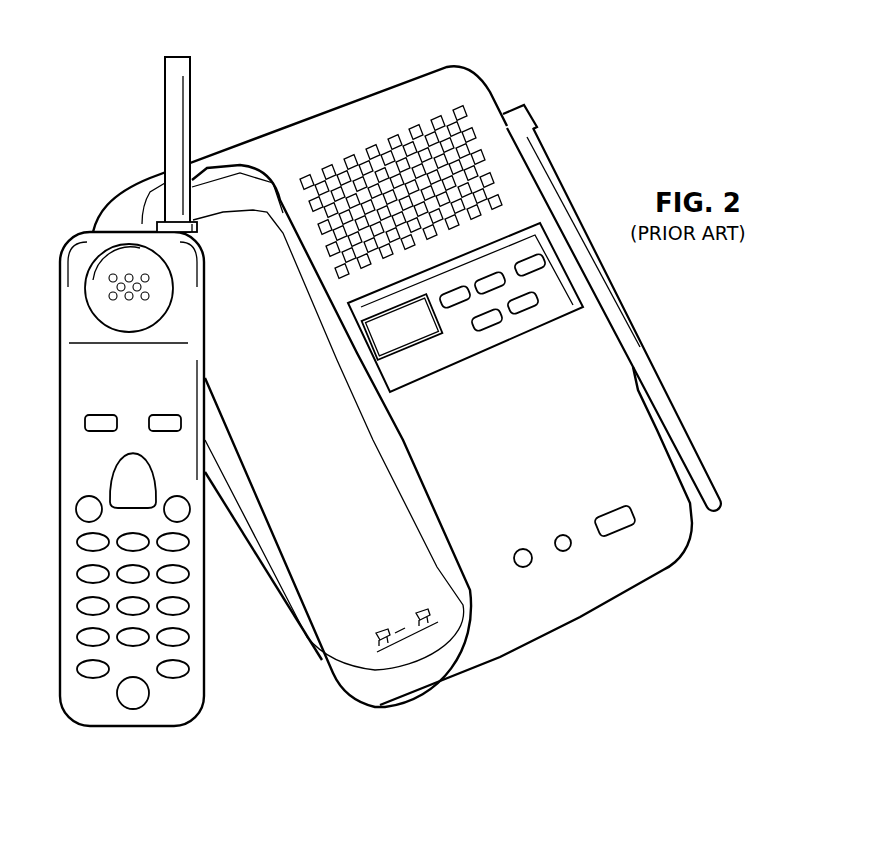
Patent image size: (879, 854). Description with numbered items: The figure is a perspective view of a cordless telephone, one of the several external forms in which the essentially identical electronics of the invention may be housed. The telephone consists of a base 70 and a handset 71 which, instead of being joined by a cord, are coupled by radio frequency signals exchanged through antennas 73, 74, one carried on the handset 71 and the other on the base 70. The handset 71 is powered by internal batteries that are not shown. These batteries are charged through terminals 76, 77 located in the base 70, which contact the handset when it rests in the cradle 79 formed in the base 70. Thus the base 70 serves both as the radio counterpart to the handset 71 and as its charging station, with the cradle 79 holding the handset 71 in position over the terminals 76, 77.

The base 70 is at (380, 112).
The handset 71 is at (90, 232).
The antenna 73 is at (173, 128).
The antenna 74 is at (650, 373).
The terminal 76 is at (378, 635).
The terminal 77 is at (417, 613).
The cradle 79 is at (220, 240).